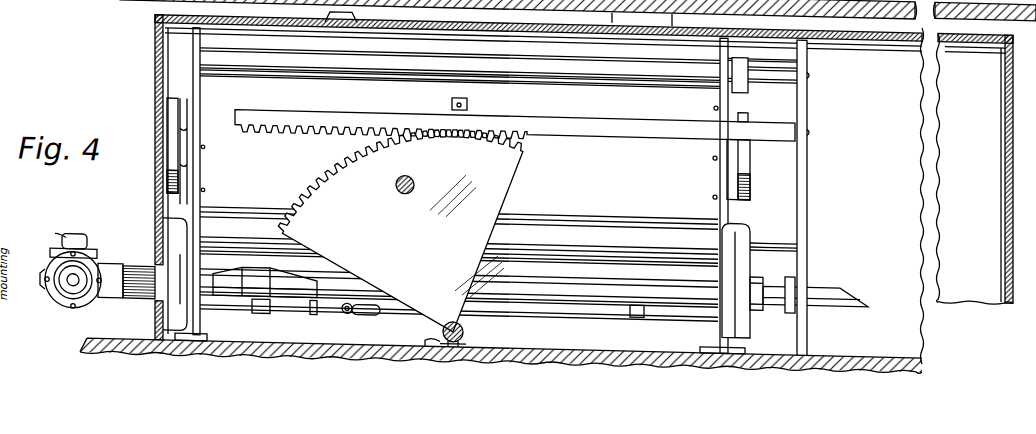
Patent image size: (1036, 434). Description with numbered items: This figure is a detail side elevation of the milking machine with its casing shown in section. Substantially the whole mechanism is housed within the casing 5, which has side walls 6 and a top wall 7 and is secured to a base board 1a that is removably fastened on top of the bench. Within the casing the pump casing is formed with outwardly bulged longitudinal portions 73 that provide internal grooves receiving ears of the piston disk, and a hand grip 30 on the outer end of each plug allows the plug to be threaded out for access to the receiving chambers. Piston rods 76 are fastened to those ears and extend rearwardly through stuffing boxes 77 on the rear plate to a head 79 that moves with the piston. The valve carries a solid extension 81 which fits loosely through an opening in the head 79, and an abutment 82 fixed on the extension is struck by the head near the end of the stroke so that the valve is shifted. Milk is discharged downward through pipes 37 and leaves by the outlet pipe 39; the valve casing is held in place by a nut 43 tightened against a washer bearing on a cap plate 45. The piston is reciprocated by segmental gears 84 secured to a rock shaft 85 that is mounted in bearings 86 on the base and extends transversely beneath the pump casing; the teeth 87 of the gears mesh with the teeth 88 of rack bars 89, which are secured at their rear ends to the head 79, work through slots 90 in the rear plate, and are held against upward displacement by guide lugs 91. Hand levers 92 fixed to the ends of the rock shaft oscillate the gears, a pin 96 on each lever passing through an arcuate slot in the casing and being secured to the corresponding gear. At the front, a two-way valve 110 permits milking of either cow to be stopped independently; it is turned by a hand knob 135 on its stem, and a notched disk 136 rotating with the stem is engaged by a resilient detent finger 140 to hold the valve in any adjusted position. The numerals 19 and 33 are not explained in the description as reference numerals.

The base board 1a is at (119, 0).
The casing 5 is at (546, 188).
The side walls 6 is at (617, 19).
The top wall 7 is at (677, 22).
The standard post 19 is at (205, 99).
The hand grip 30 is at (172, 148).
The cam 33 is at (283, 271).
The pipes 37 is at (684, 299).
The outlet pipe 39 is at (354, 323).
The nut 43 is at (758, 264).
The cap plate 45 is at (176, 239).
The outwardly bulged portions 73 is at (646, 63).
The piston rods 76 is at (755, 62).
The stuffing boxes 77 is at (733, 206).
The head 79 is at (807, 199).
The solid extension 81 is at (842, 290).
The abutment 82 is at (786, 296).
The segmental gears 84 is at (512, 176).
The rock shaft 85 is at (470, 321).
The bearings 86 is at (437, 330).
The teeth 87 is at (350, 160).
The teeth 88 is at (463, 116).
The rack bars 89 is at (622, 122).
The slots 90 is at (713, 89).
The guide lugs 91 is at (452, 93).
The hand levers 92 is at (351, 12).
The pin 96 is at (418, 182).
The two-way valve 110 is at (96, 296).
The hand knob 135 is at (85, 230).
The disk 136 is at (66, 236).
The resilient detent finger 140 is at (52, 262).